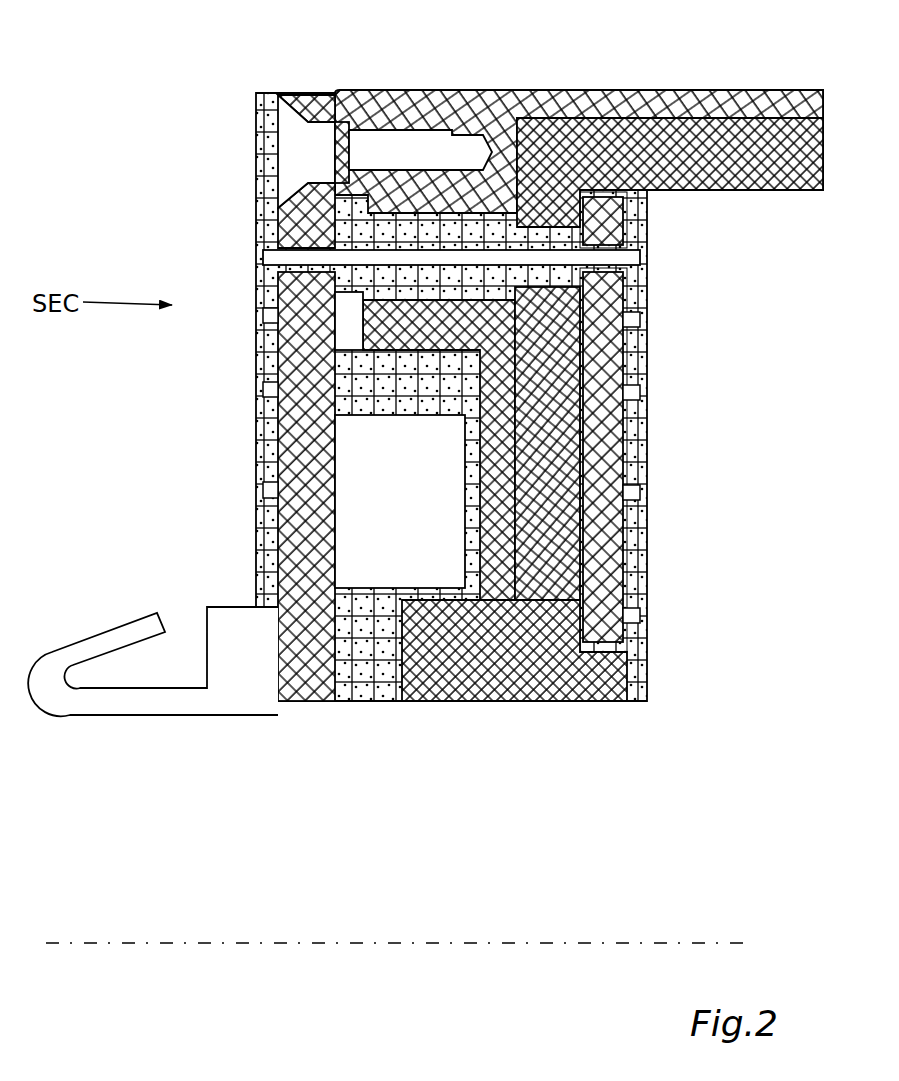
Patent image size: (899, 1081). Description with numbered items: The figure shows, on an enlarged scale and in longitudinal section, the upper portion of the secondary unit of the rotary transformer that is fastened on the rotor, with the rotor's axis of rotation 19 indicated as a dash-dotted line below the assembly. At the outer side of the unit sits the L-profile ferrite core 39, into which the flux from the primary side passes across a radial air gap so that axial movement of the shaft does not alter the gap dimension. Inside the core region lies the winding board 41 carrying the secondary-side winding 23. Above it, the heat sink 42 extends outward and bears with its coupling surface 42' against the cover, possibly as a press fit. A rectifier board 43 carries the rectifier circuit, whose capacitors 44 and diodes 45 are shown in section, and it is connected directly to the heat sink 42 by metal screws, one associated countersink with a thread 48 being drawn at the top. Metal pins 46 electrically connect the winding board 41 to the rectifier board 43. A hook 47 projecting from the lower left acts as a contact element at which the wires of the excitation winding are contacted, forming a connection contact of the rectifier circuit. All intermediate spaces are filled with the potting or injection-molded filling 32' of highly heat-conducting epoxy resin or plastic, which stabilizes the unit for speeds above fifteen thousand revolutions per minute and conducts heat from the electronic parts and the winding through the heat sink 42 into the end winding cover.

The axis of rotation 19 is at (66, 945).
The secondary-side winding 23 is at (615, 352).
The potting or injection-molded filling 32' is at (469, 395).
The ferrite core 39 is at (520, 701).
The winding board 41 is at (603, 460).
The heat sink 42 is at (670, 122).
The coupling surface 42' is at (579, 110).
The rectifier board 43 is at (307, 702).
The capacitor 44 is at (372, 512).
The diode 45 is at (335, 333).
The metal pin 46 is at (643, 257).
The hook 47 is at (172, 715).
The countersink with a thread 48 is at (411, 157).